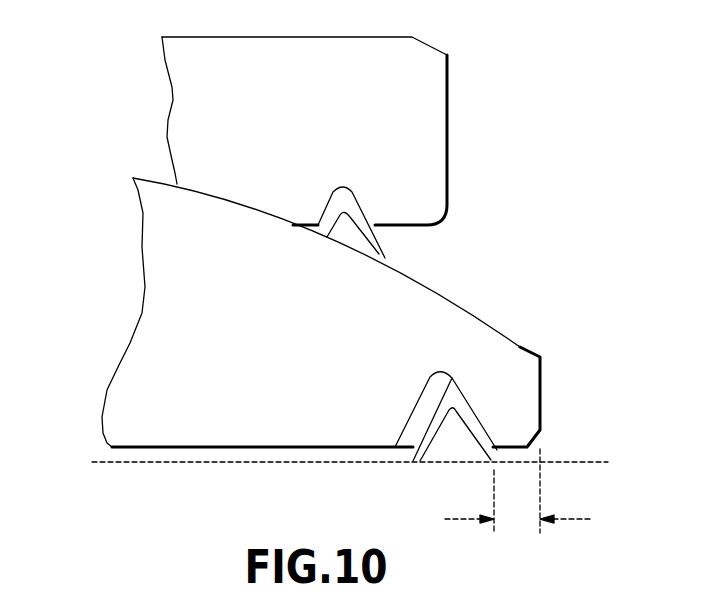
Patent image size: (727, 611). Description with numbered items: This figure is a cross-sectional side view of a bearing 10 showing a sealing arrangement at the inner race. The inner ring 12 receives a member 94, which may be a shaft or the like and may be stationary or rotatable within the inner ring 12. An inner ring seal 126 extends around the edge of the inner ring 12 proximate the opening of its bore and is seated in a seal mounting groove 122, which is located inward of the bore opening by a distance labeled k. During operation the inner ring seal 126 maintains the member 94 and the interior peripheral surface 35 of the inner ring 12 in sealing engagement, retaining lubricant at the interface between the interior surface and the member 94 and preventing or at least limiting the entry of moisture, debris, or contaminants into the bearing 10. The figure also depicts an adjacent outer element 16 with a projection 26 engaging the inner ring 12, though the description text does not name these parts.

The bearing 10 is at (80, 272).
The inner ring 12 is at (420, 290).
The insert holder / clamp 16 is at (282, 99).
The holder projection 26 is at (368, 222).
The interior peripheral surface 35 is at (192, 448).
The member 94 is at (590, 462).
The seal mounting groove 122 is at (394, 449).
The inner ring seal 126 is at (470, 410).